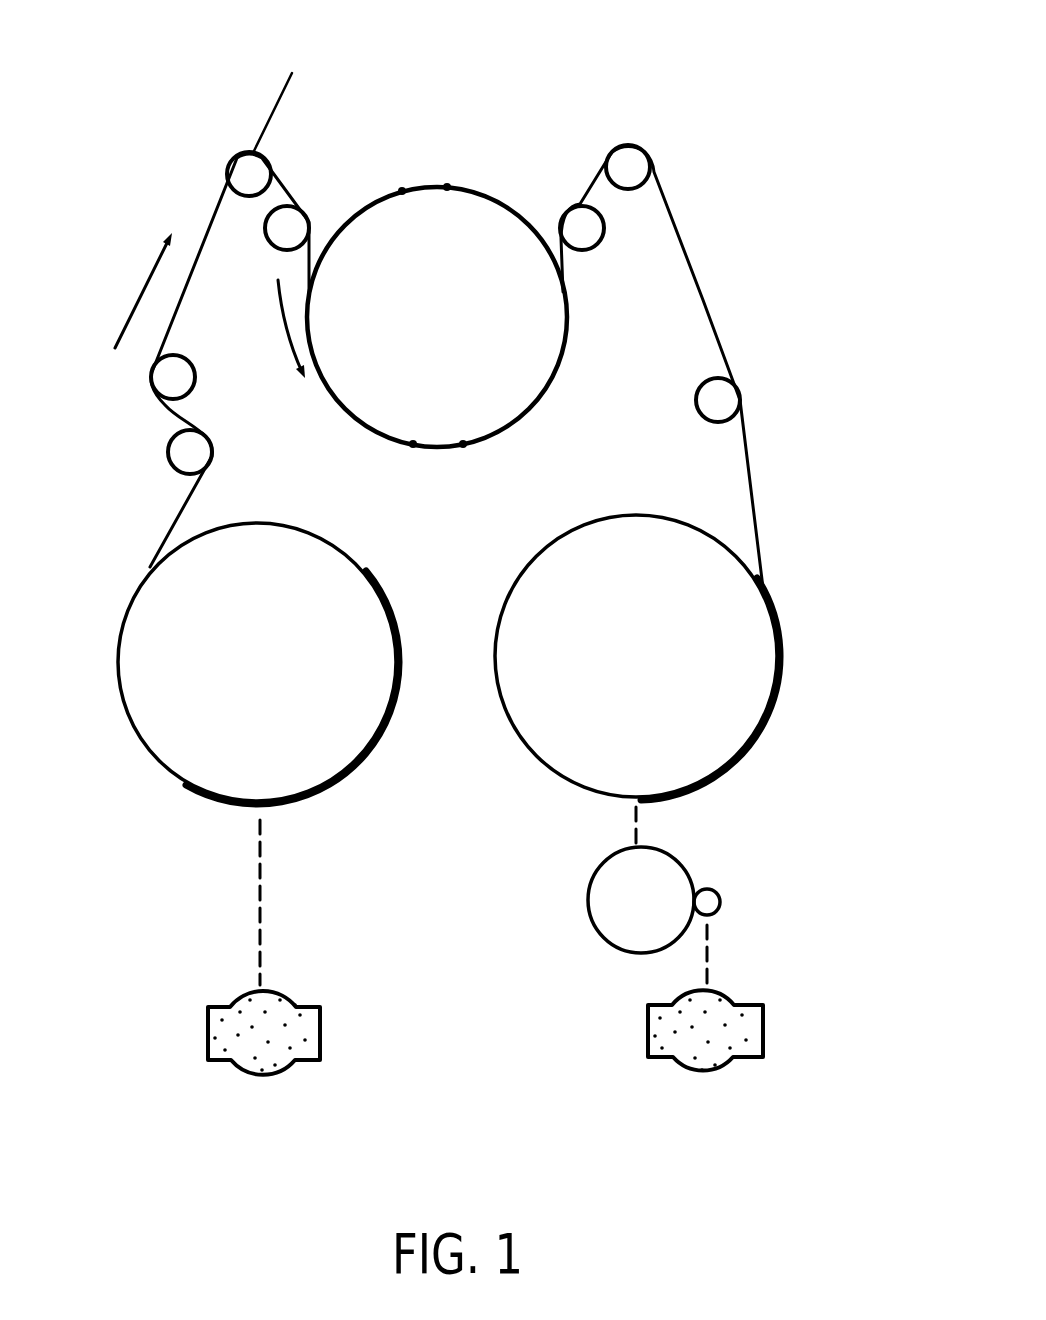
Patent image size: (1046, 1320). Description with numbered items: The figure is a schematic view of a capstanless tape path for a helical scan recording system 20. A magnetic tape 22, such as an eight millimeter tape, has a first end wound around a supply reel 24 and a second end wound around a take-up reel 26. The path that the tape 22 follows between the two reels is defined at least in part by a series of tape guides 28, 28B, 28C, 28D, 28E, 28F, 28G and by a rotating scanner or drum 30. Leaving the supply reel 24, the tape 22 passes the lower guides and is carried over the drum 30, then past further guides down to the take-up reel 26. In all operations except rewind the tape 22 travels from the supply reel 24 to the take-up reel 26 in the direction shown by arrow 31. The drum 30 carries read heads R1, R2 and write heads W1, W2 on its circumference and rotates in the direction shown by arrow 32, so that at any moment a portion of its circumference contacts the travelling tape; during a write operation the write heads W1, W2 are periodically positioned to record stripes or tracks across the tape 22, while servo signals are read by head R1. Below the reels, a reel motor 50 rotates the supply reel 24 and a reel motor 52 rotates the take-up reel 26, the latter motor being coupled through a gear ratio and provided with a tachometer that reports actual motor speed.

The capstanless tape path for a helical scan recording system 20 is at (806, 98).
The magnetic tape 22 is at (705, 298).
The supply reel 24 is at (327, 582).
The take-up reel 26 is at (507, 598).
The tape guide 28 is at (187, 442).
The tape guide 28B is at (173, 372).
The tape guide 28C is at (232, 160).
The tape guide 28D is at (287, 225).
The tape guide 28E is at (578, 225).
The tape guide 28F is at (628, 165).
The tape guide 28G is at (720, 395).
The drum 30 is at (533, 367).
The arrow 31 is at (143, 290).
The arrow 32 is at (278, 308).
The reel motor 50 is at (307, 1038).
The reel motor 52 is at (765, 1007).
The read head R1 is at (402, 189).
The read head R2 is at (447, 185).
The write head W1 is at (463, 446).
The write head W2 is at (413, 446).